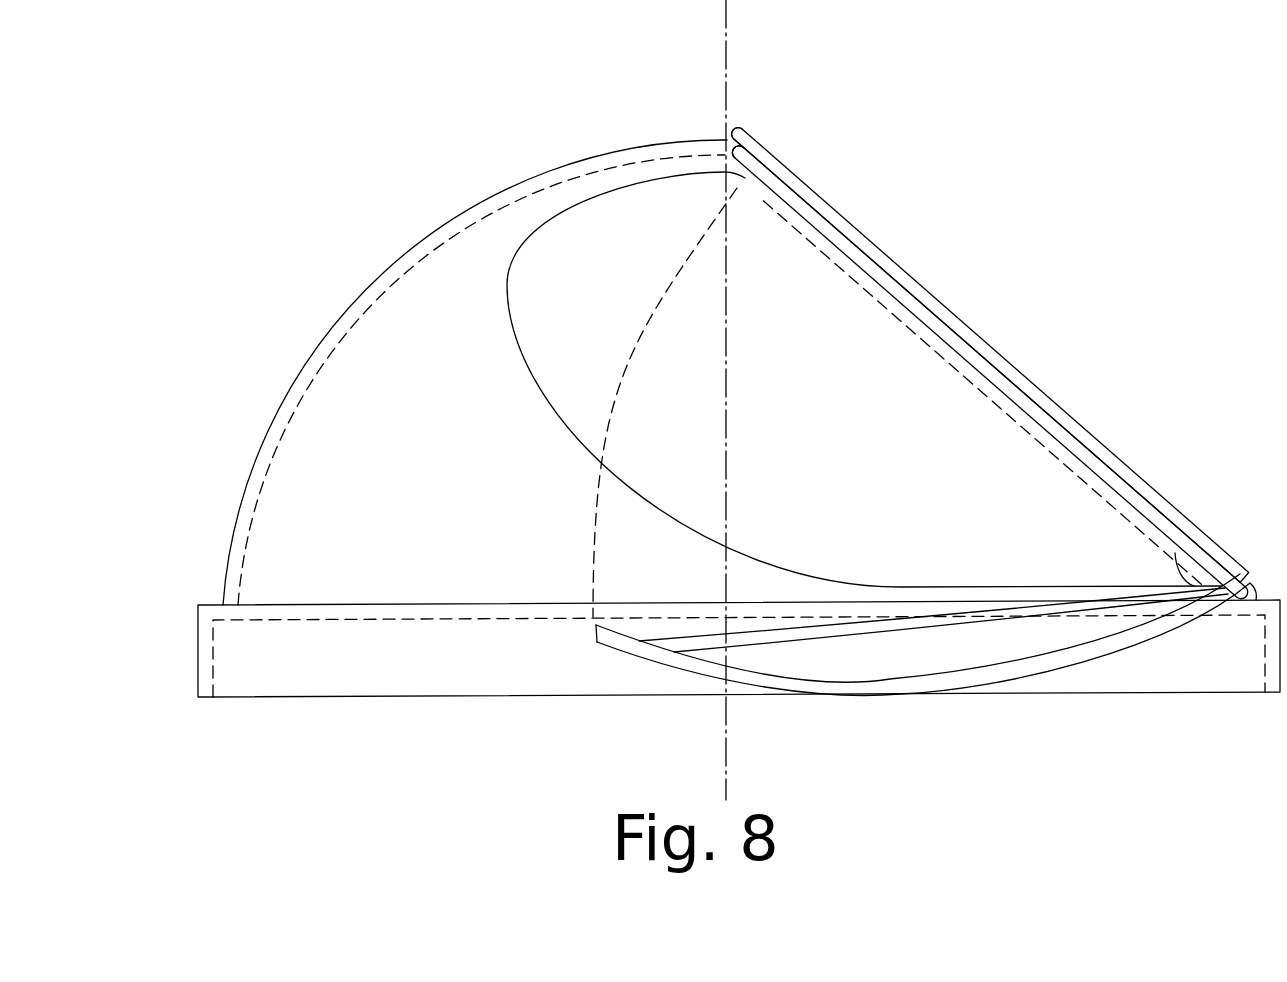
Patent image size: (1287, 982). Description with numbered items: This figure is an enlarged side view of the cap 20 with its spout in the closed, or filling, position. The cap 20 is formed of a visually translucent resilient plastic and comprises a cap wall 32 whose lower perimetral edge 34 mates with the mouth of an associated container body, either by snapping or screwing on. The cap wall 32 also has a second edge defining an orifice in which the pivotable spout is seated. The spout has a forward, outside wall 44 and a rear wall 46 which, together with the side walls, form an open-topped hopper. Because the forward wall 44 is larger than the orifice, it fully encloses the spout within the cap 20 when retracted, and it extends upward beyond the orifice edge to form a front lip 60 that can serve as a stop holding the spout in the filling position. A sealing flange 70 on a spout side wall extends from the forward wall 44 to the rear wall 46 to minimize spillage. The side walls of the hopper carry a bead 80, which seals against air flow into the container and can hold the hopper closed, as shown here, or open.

The cap 20 is at (1045, 186).
The cap wall 32 is at (379, 278).
The lower perimetral edge 34 is at (353, 664).
The forward wall 44 is at (892, 262).
The rear wall 46 is at (883, 693).
The front lip 60 is at (725, 129).
The sealing flange 70 is at (748, 641).
The bead 80 is at (948, 345).